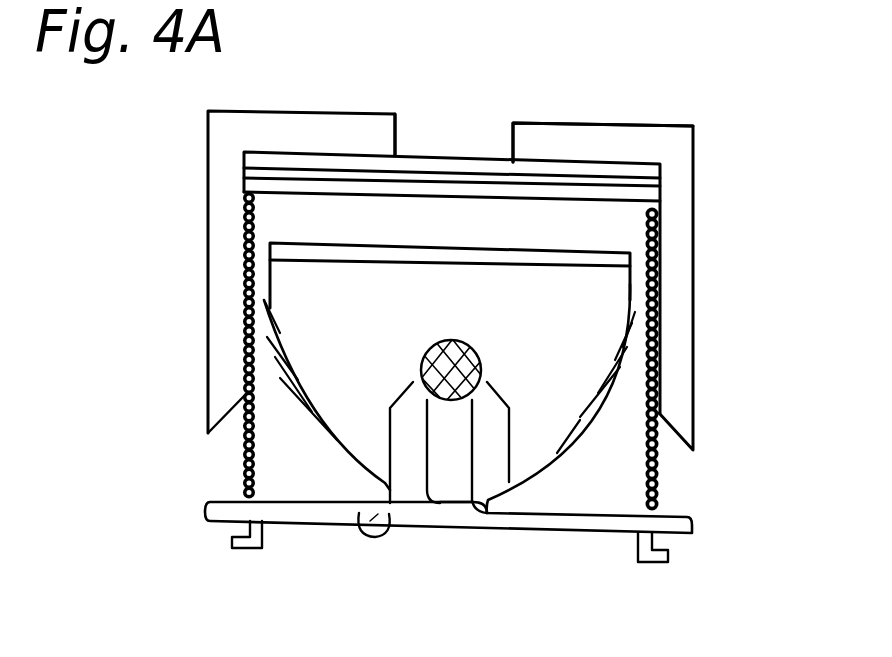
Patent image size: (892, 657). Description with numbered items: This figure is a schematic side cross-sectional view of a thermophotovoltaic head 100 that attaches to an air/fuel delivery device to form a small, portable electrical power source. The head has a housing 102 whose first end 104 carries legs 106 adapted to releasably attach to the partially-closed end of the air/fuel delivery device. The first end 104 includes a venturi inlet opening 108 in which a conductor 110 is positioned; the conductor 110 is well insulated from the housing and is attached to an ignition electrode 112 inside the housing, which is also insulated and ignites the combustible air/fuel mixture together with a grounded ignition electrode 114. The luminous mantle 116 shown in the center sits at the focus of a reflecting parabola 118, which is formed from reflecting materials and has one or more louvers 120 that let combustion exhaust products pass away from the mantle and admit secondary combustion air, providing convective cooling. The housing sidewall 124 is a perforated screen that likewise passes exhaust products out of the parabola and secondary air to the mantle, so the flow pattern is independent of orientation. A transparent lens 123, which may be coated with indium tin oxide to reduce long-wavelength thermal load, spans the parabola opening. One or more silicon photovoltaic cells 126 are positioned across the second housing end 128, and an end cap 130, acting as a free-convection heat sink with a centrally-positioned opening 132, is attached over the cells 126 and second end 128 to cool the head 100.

The thermophotovoltaic head 100 is at (722, 125).
The housing 102 is at (693, 285).
The first end 104 is at (555, 533).
The legs 106 is at (237, 550).
The venturi inlet opening 108 is at (438, 517).
The conductor 110 is at (375, 520).
The ignition electrode 112 is at (390, 423).
The grounded ignition electrode 114 is at (509, 408).
The light source 116 is at (457, 338).
The reflecting parabola 118 is at (580, 478).
The louvers 120 is at (627, 364).
The transparent lens 123 is at (417, 257).
The housing sidewall 124 is at (660, 240).
The photovoltaic cells 126 is at (294, 158).
The second housing end 128 is at (242, 195).
The end cap 130 is at (620, 143).
The centrally-positioned opening 132 is at (397, 130).